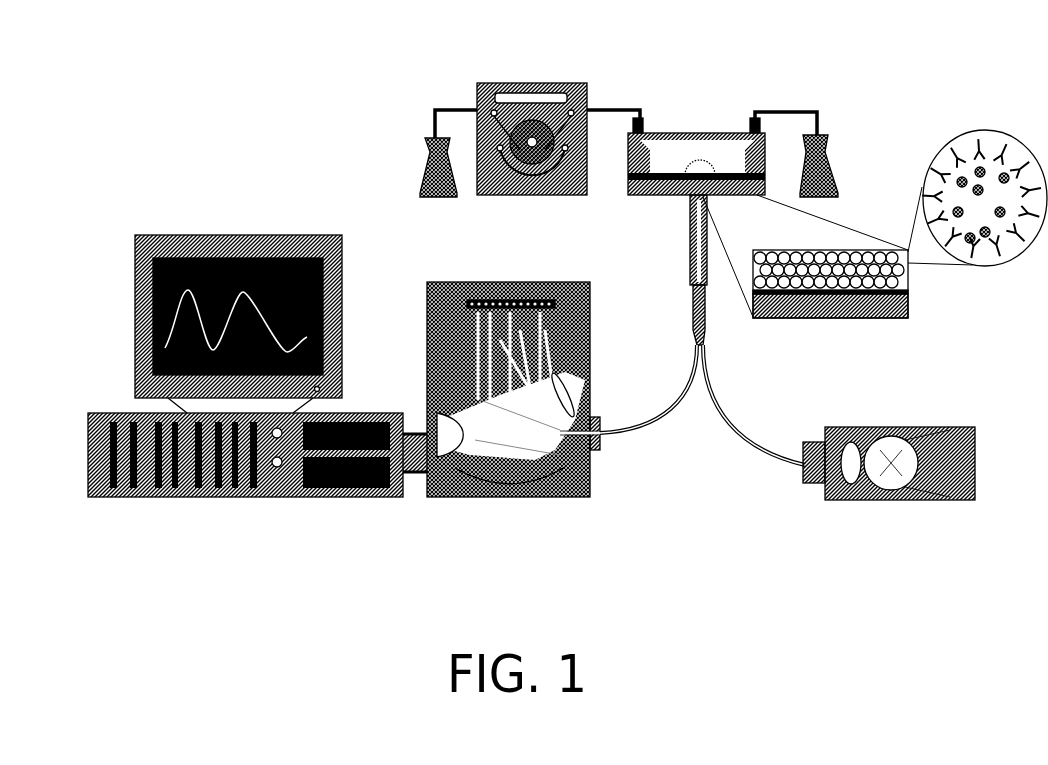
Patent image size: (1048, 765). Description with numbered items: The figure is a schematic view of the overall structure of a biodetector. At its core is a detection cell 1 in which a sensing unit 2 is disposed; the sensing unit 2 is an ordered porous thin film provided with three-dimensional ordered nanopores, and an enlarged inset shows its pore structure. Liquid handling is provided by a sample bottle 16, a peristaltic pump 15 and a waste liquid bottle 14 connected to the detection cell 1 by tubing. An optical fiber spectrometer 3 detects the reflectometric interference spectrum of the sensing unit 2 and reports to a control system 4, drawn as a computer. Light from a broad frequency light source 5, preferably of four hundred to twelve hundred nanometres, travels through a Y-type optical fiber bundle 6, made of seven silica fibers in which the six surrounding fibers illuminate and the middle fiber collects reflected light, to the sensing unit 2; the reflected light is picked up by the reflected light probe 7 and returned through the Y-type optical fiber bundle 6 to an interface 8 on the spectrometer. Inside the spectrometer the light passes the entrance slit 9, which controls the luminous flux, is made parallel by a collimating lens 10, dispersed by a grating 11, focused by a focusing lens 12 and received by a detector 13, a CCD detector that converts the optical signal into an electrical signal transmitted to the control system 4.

The detection cell 1 is at (674, 122).
The sensing unit 2 is at (787, 318).
The optical fiber spectrometer 3 is at (685, 473).
The control system 4 is at (270, 493).
The broad frequency light source 5 is at (837, 498).
The Y-type optical fiber bundle 6 is at (713, 335).
The reflected light probe 7 is at (692, 222).
The interface 8 is at (597, 423).
The entrance slit 9 is at (590, 435).
The collimating lens 10 is at (442, 440).
The grating 11 is at (573, 378).
The focusing lens 12 is at (503, 487).
The detector 13 is at (493, 302).
The waste liquid bottle 14 is at (423, 165).
The peristaltic pump 15 is at (504, 84).
The sample bottle 16 is at (835, 155).